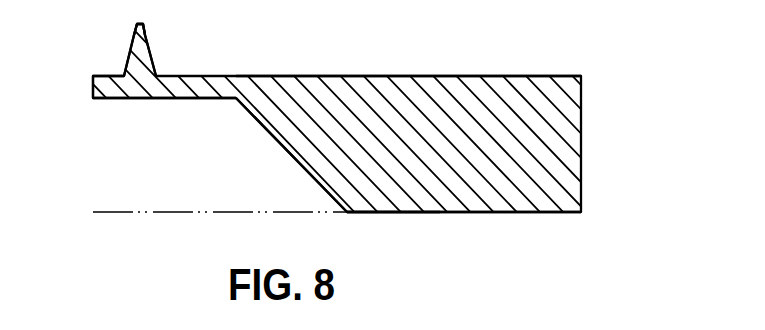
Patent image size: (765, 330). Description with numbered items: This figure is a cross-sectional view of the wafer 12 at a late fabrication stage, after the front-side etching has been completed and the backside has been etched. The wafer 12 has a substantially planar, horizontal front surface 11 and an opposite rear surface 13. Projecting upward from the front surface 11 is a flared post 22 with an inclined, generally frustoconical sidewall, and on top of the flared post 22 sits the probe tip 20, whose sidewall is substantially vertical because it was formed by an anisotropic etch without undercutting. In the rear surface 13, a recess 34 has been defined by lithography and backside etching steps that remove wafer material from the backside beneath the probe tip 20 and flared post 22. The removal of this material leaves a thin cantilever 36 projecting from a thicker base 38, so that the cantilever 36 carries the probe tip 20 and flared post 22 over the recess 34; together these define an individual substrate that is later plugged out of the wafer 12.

The front surface 11 is at (403, 76).
The wafer 12 is at (581, 147).
The rear surface 13 is at (465, 212).
The probe tip 20 is at (144, 27).
The flared post 22 is at (150, 55).
The recess 34 is at (220, 155).
The cantilever 36 is at (137, 91).
The base 38 is at (411, 205).